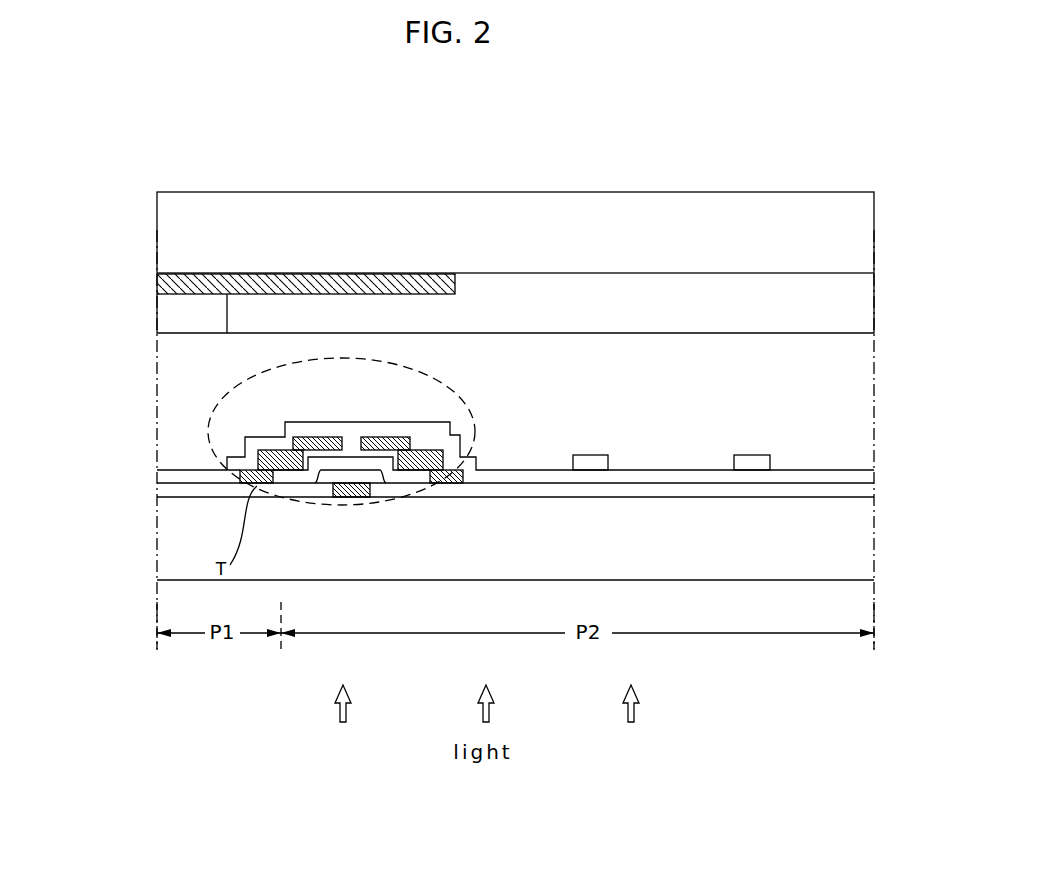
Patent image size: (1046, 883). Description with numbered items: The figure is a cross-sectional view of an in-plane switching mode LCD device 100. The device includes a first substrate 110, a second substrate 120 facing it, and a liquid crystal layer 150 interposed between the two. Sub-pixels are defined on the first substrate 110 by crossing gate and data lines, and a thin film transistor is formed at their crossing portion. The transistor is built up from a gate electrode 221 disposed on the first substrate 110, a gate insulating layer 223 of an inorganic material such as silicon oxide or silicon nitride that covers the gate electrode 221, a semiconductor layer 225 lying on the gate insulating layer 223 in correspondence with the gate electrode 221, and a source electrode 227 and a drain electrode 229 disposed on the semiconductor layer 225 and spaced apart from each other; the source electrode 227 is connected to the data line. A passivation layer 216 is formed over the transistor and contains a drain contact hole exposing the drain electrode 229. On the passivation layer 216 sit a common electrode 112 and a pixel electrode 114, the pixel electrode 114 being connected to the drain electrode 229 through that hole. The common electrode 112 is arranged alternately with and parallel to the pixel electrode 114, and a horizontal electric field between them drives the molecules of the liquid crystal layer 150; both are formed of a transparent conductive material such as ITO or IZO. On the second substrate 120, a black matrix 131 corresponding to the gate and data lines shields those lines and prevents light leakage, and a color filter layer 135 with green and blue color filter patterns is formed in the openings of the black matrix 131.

The LCD device 100 is at (764, 118).
The first substrate 110 is at (182, 516).
The common electrode 112 is at (587, 463).
The pixel electrode 114 is at (753, 463).
The second substrate 120 is at (178, 257).
The black matrix 131 is at (172, 288).
The color filter layer 135 is at (857, 318).
The liquid crystal layer 150 is at (853, 400).
The passivation layer 216 is at (509, 470).
The gate electrode 221 is at (350, 482).
The gate insulating layer 223 is at (398, 494).
The semiconductor layer 225 is at (287, 477).
The source electrode 227 is at (253, 488).
The drain electrode 229 is at (416, 440).